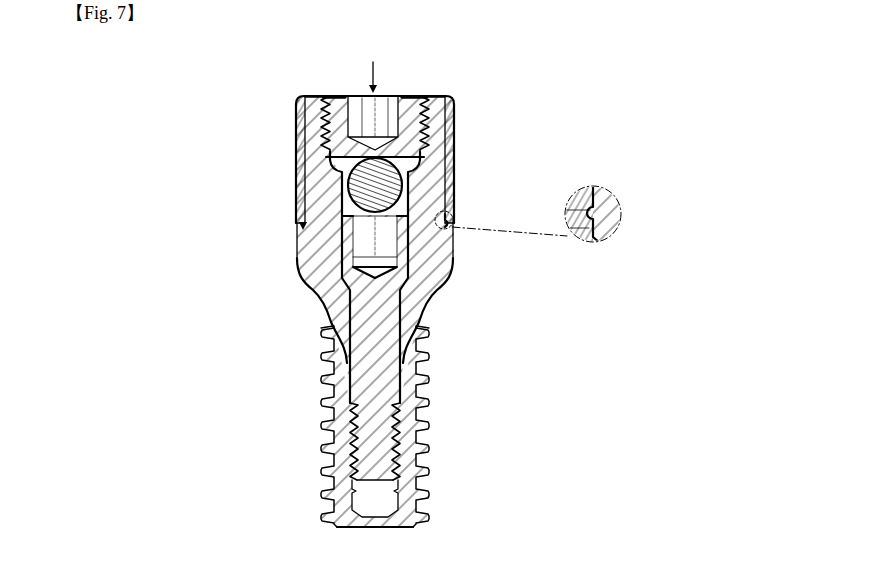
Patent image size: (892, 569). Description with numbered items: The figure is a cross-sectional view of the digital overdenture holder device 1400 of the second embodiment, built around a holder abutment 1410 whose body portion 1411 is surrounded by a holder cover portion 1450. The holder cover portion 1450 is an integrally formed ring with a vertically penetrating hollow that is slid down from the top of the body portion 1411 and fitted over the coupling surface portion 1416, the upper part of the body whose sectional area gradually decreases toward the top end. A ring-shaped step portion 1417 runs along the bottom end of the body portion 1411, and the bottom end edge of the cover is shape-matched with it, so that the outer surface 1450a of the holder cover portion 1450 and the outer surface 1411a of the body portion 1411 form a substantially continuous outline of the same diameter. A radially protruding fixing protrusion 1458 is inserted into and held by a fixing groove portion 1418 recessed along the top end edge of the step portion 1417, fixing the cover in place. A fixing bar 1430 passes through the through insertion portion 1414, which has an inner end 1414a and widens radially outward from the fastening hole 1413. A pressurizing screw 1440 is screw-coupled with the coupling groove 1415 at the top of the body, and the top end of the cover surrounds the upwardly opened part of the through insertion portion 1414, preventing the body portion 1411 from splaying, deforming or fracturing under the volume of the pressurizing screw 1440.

The dental implant assembly 1400 is at (196, 78).
The holder abutment 1410 is at (309, 296).
The body portion 1411 is at (303, 264).
The outer surface of the body portion 1411a is at (305, 257).
The fastening hole 1413 is at (413, 318).
The through insertion portion 1414 is at (415, 165).
The inner end of the through insertion portion 1414a is at (420, 211).
The coupling groove 1415 is at (430, 128).
The coupling surface portion 1416 is at (304, 166).
The step portion 1417 is at (299, 227).
The fixing groove portion 1418 is at (594, 240).
The fixing bar 1430 is at (354, 152).
The pressurizing screw 1440 is at (428, 108).
The holder cover portion 1450 is at (290, 131).
The outer surface of the holder cover portion 1450a is at (307, 187).
The fixing protrusion 1458 is at (598, 213).